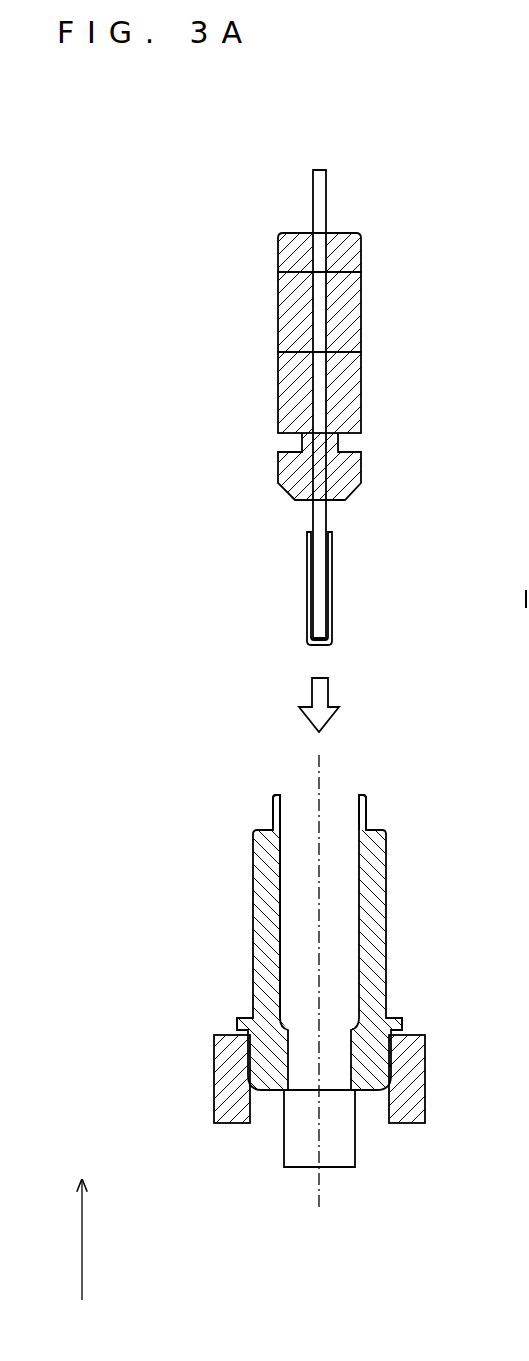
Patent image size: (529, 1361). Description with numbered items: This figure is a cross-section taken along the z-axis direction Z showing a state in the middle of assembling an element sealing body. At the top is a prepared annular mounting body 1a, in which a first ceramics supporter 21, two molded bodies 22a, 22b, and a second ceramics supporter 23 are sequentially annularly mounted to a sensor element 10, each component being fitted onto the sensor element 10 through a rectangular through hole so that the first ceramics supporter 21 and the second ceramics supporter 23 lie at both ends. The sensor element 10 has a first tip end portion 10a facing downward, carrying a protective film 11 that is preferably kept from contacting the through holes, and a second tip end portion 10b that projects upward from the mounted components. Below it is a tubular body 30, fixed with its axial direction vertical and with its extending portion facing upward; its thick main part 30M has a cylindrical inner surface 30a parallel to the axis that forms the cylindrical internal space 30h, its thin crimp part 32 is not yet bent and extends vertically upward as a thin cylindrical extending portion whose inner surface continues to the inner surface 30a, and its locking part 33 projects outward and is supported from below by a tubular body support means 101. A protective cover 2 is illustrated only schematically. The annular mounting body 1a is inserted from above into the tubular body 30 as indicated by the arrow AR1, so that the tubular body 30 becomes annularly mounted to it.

The annular mounting body 1a is at (235, 401).
The sensor element 10 is at (327, 185).
The first tip end portion 10a is at (309, 650).
The second tip end portion 10b is at (321, 165).
The protective film 11 is at (332, 590).
The first ceramics supporter 21 is at (346, 462).
The molded body 22a is at (345, 389).
The molded body 22b is at (345, 325).
The second ceramics supporter 23 is at (346, 260).
The arrow AR1 is at (322, 698).
The tubular body 30 is at (152, 963).
The cylindrical inner surface 30a is at (283, 889).
The main part 30M is at (262, 920).
The internal space 30h is at (338, 927).
The crimp part 32 is at (275, 808).
The locking part 33 is at (238, 1023).
The tubular body support means 101 is at (229, 1125).
The protective cover 2 is at (282, 1158).
The z-axis direction Z is at (81, 1226).